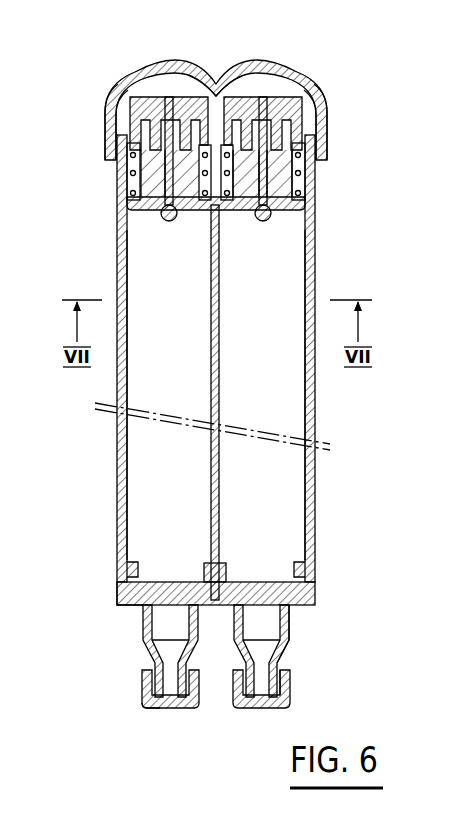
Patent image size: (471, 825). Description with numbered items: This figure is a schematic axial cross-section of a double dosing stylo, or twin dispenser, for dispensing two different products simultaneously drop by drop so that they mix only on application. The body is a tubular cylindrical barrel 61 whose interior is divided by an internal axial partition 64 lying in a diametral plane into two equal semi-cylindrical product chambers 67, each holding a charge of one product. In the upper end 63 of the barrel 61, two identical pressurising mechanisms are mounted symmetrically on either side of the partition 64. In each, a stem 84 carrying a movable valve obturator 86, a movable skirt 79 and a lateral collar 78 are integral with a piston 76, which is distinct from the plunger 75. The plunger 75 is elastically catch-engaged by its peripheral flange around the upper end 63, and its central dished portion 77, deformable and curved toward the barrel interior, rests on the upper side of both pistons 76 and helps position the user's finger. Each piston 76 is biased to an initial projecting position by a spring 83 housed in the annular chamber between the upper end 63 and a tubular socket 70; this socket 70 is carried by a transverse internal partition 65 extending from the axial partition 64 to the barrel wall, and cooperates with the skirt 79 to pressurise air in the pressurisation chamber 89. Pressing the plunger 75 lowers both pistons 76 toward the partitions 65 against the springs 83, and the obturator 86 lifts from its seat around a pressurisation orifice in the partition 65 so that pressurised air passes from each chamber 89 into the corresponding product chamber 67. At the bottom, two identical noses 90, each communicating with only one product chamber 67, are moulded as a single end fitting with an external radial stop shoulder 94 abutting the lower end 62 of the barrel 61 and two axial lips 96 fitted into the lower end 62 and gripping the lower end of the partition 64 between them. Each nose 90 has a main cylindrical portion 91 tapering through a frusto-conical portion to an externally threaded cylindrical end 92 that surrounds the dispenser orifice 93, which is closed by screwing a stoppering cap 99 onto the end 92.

The plunger 75 is at (284, 62).
The central dished portion 77 is at (189, 74).
The piston 76 is at (143, 92).
The lateral collar 78 is at (108, 126).
The movable skirt 79 is at (113, 108).
The upper end of the barrel 63 is at (128, 172).
The spring 83 is at (133, 186).
The stem 84 is at (163, 197).
The transverse internal partition 65 is at (160, 209).
The movable valve obturator 86 is at (170, 223).
The tubular socket 70 is at (286, 182).
The pressurisation chamber 89 is at (296, 232).
The internal axial partition 64 is at (220, 460).
The product chamber 67 is at (288, 390).
The barrel 61 is at (122, 445).
The axial lip 96 is at (203, 568).
The lower end of the barrel 62 is at (118, 583).
The nose 90 is at (140, 641).
The main cylindrical portion 91 is at (292, 623).
The external radial stop shoulder 94 is at (118, 607).
The dispenser orifice 93 is at (170, 703).
The cylindrical end 92 is at (288, 687).
The stoppering cap 99 is at (150, 701).